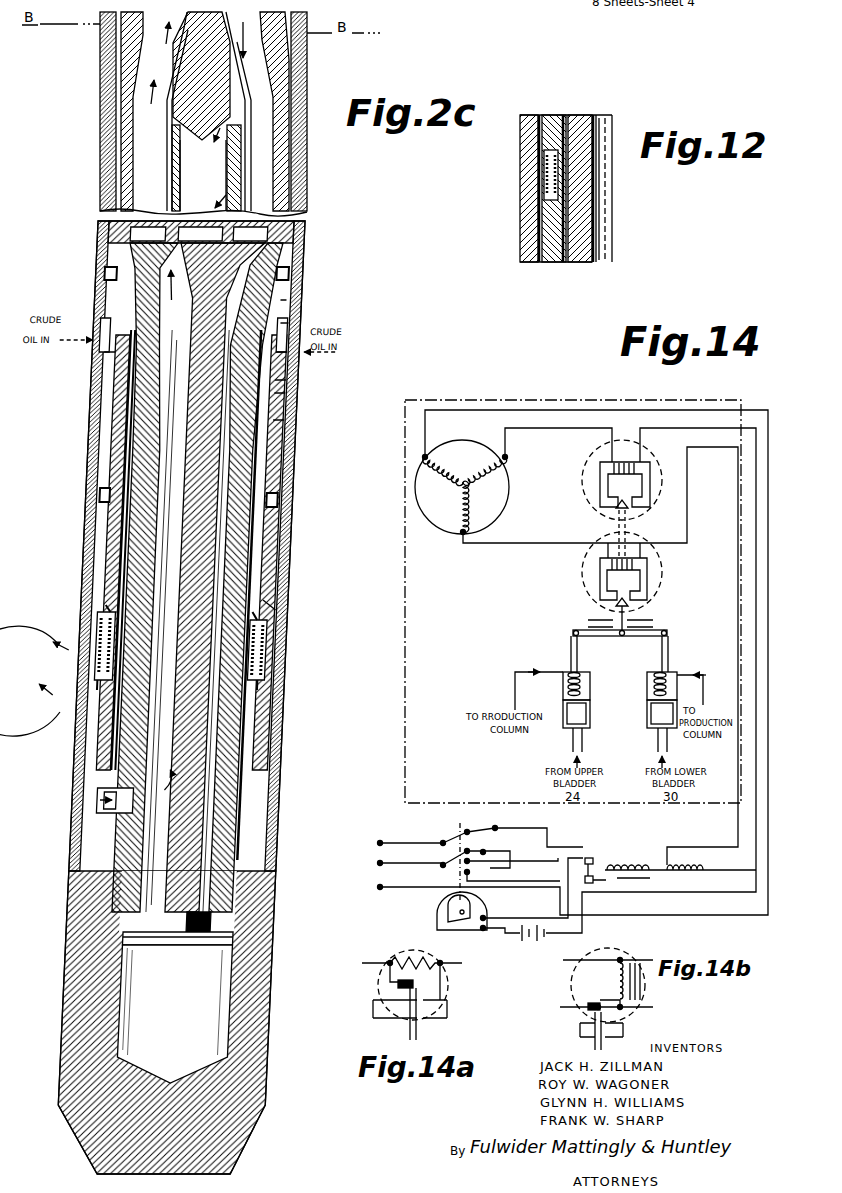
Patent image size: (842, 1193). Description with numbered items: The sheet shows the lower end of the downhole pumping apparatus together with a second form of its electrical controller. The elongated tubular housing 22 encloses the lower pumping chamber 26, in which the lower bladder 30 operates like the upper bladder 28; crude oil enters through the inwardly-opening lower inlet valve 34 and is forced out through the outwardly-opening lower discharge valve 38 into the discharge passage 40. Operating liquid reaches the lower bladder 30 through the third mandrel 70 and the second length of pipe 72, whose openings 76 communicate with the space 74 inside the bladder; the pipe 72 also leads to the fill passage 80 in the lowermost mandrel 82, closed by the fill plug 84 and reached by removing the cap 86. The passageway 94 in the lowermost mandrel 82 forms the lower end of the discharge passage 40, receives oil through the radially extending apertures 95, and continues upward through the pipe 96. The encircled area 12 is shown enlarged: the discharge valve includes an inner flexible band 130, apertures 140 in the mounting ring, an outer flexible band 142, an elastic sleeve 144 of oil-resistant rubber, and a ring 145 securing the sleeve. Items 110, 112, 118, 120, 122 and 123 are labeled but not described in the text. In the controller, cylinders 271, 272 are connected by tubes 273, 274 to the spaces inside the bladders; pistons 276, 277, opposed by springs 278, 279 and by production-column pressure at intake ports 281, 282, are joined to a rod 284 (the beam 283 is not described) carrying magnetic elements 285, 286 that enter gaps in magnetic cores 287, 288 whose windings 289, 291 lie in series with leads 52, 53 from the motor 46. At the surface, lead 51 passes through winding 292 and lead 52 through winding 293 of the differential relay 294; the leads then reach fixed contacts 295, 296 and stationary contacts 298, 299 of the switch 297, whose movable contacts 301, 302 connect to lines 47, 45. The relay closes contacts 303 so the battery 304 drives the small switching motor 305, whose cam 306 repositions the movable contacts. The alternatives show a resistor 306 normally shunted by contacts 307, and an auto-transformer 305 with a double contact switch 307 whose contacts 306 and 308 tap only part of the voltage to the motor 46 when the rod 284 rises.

In FIG. 2C, the tubular housing 22 is at (316, 550).
In FIG. 12, the tubular housing 22 is at (520, 240).
In FIG. 2C, the lower pumping chamber 26 is at (116, 91).
In FIG. 2C, the upper bladder 28 is at (130, 505).
In FIG. 12, the upper bladder 28 is at (570, 228).
In FIG. 2C, the lower bladder 30 is at (107, 123).
In FIG. 2C, the lower inlet valve 34 is at (317, 317).
In FIG. 2C, the lower discharge valve 38 is at (313, 633).
In FIG. 2C, the discharge passage 40 is at (183, 453).
In FIG. 12, the discharge passage 40 is at (605, 205).
In FIG. 14, the motor 46 is at (511, 475).
In FIG. 14, the line 47 is at (397, 843).
In FIG. 14, the line 45 is at (387, 866).
In FIG. 14, the lead 51 is at (573, 401).
In FIG. 14B, the lead 51 is at (572, 960).
In FIG. 14, the lead 52 is at (508, 428).
In FIG. 14B, the lead 52 is at (578, 1027).
In FIG. 14, the lead 53 is at (557, 543).
In FIG. 2C, the third mandrel 70 is at (268, 34).
In FIG. 2C, the second length of pipe 72 is at (290, 100).
In FIG. 2C, the space 74 is at (203, 175).
In FIG. 2C, the openings 76 is at (233, 125).
In FIG. 2C, the fill passage 80 is at (244, 423).
In FIG. 2C, the lowermost mandrel 82 is at (262, 478).
In FIG. 12, the lowermost mandrel 82 is at (570, 255).
In FIG. 2C, the fill plug 84 is at (259, 930).
In FIG. 2C, the removable cap 86 is at (124, 988).
In FIG. 2C, the passageway 94 is at (173, 397).
In FIG. 2C, the radially extending apertures 95 is at (132, 817).
In FIG. 2C, the pipe 96 is at (118, 230).
In FIG. 2C, the port 110 is at (309, 380).
In FIG. 2C, the inlet 112 is at (308, 323).
In FIG. 2C, the port 118 is at (126, 348).
In FIG. 2C, the inlet channel 120 is at (112, 333).
In FIG. 2C, the passage 122 is at (311, 393).
In FIG. 2C, the passage 123 is at (311, 420).
In FIG. 2C, the flexible band 130 is at (296, 642).
In FIG. 2C, the apertures 140 is at (136, 650).
In FIG. 12, the apertures 140 is at (545, 172).
In FIG. 2C, the second flexible band 142 is at (297, 675).
In FIG. 12, the second flexible band 142 is at (535, 262).
In FIG. 2C, the elastic sleeve 144 is at (140, 632).
In FIG. 12, the elastic sleeve 144 is at (548, 192).
In FIG. 2C, the ring 145 is at (312, 605).
In FIG. 2C, the encircled area 12 is at (35, 681).
In FIG. 14, the cylinder 271 is at (592, 720).
In FIG. 14, the cylinder 272 is at (643, 734).
In FIG. 14, the tube 273 is at (577, 752).
In FIG. 14, the tube 274 is at (668, 743).
In FIG. 14, the piston 276 is at (591, 700).
In FIG. 14, the piston 277 is at (647, 710).
In FIG. 14, the spring 278 is at (588, 675).
In FIG. 14, the spring 279 is at (672, 672).
In FIG. 14, the intake port 281 is at (548, 667).
In FIG. 14, the intake port 282 is at (668, 655).
In FIG. 14, the balance beam 283 is at (672, 627).
In FIG. 14, the rod 284 is at (612, 617).
In FIG. 14A, the rod 284 is at (420, 1027).
In FIG. 14B, the rod 284 is at (580, 1043).
In FIG. 14, the magnetic element 285 is at (613, 600).
In FIG. 14, the magnetic element 286 is at (630, 510).
In FIG. 14, the magnetic core 287 is at (650, 582).
In FIG. 14, the magnetic core 288 is at (651, 490).
In FIG. 14, the winding 289 is at (640, 552).
In FIG. 14, the winding 291 is at (632, 463).
In FIG. 14, the winding 292 is at (630, 882).
In FIG. 14, the winding 293 is at (685, 862).
In FIG. 14, the differential relay 294 is at (640, 860).
In FIG. 14, the fixed contact 295 is at (467, 826).
In FIG. 14, the fixed contact 296 is at (482, 880).
In FIG. 14, the switch 297 is at (465, 851).
In FIG. 14, the stationary contact 298 is at (512, 836).
In FIG. 14, the stationary contact 299 is at (497, 863).
In FIG. 14, the movable contact 301 is at (460, 830).
In FIG. 14, the movable contact 302 is at (452, 867).
In FIG. 14, the contacts 303 is at (588, 857).
In FIG. 14, the battery 304 is at (538, 945).
In FIG. 14, the switching motor 305 is at (470, 932).
In FIG. 14B, the switching motor 305 is at (643, 960).
In FIG. 14, the switching cam 306 is at (488, 910).
In FIG. 14A, the switching cam 306 is at (408, 960).
In FIG. 14B, the switching cam 306 is at (597, 1005).
In FIG. 14A, the contacts 307 is at (450, 992).
In FIG. 14B, the contacts 307 is at (605, 1000).
In FIG. 14B, the contacts 308 is at (617, 972).